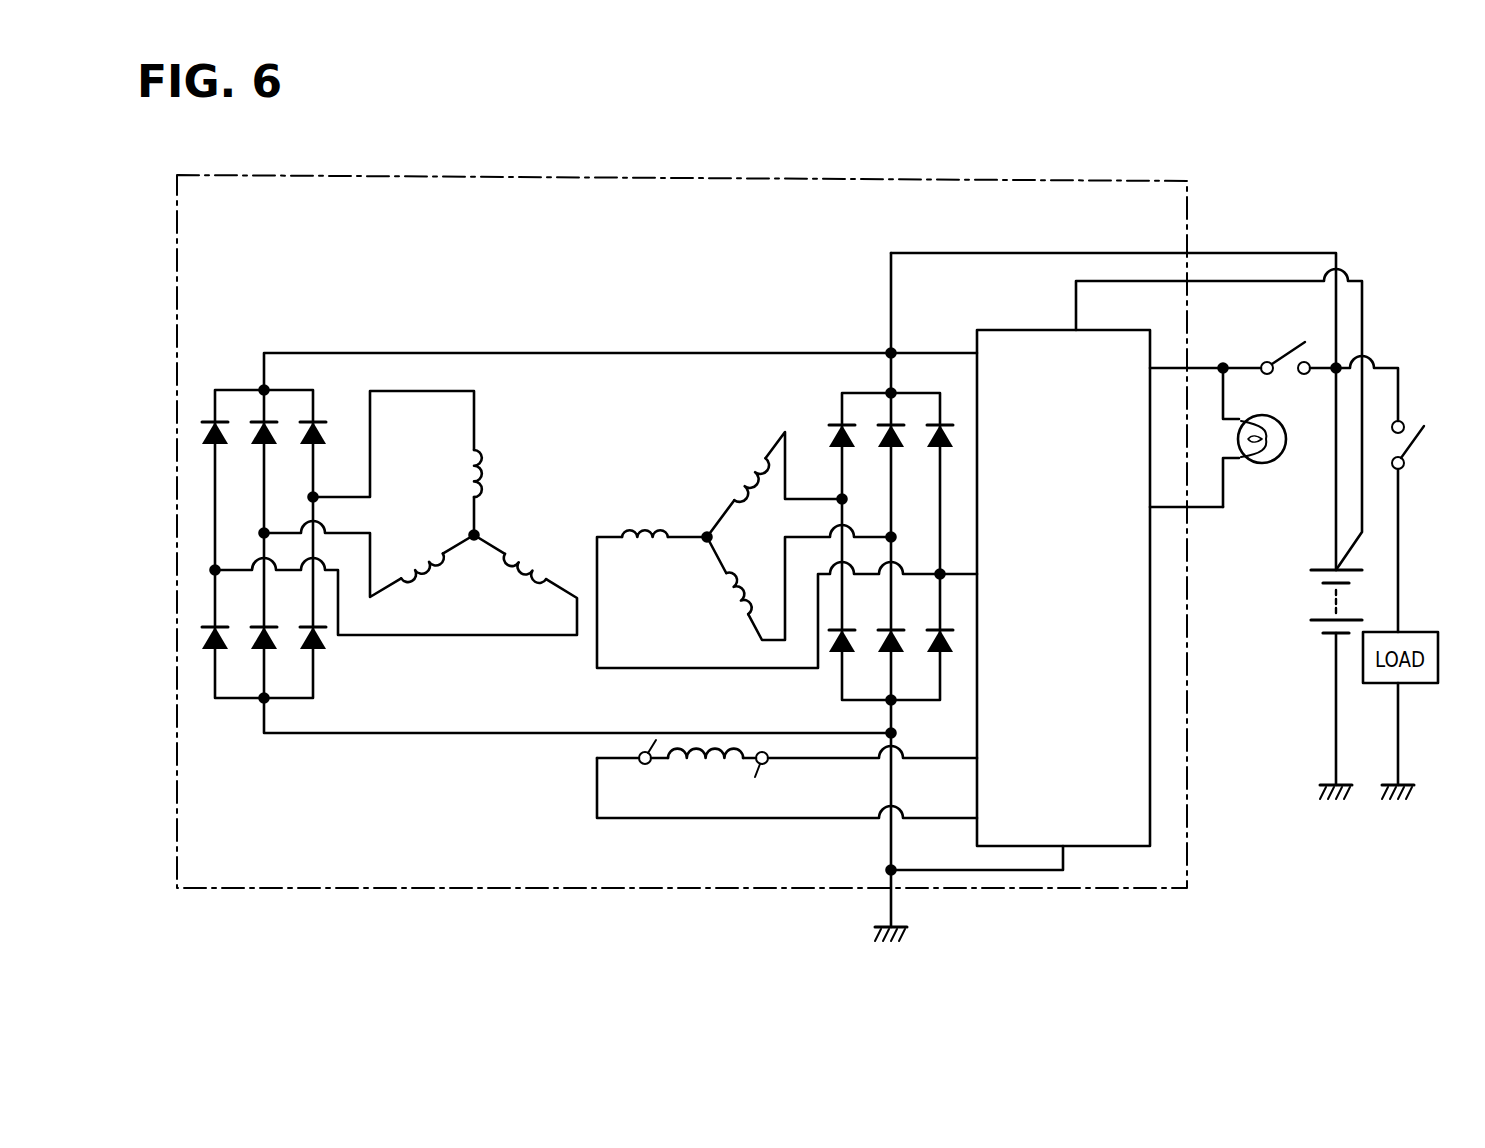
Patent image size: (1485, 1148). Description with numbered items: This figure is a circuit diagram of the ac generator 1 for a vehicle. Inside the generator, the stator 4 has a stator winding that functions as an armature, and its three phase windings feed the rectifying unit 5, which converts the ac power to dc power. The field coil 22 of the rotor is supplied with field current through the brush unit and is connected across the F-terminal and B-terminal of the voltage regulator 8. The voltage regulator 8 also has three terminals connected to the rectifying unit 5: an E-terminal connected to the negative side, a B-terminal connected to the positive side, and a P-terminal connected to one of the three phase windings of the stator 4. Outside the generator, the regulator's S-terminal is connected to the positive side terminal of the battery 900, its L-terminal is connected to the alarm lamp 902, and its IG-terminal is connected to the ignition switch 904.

The ac generator 1 is at (1160, 181).
The stator 4 is at (520, 652).
The rectifying unit 5 is at (235, 390).
The voltage regulator 8 is at (1020, 330).
The field coil 22 is at (708, 772).
The battery 900 is at (1320, 628).
The alarm lamp 902 is at (1265, 463).
The ignition switch 904 is at (1292, 347).